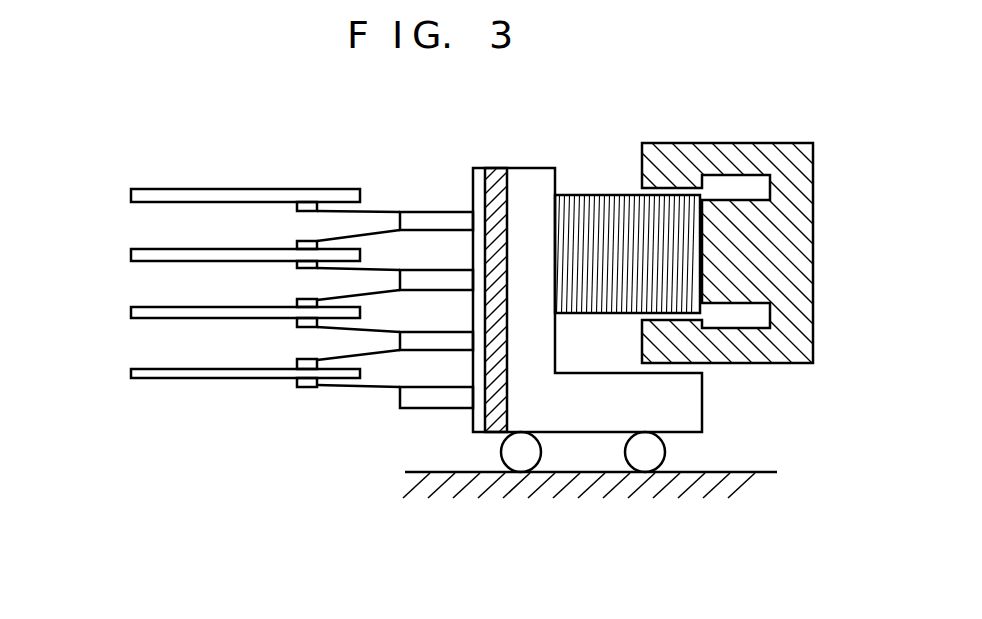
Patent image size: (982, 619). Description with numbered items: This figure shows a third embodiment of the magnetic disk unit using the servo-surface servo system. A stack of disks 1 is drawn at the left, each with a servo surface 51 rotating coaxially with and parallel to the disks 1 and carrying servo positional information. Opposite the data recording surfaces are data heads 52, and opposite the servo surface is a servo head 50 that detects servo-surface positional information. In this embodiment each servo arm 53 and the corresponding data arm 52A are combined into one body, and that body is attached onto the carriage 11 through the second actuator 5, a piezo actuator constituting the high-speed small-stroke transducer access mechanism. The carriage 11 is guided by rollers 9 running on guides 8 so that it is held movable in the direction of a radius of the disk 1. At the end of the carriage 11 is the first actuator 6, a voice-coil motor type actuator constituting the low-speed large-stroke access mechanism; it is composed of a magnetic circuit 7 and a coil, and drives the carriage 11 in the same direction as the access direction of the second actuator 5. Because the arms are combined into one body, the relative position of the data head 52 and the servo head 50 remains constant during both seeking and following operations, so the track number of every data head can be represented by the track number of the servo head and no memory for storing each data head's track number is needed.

The disk 1 is at (160, 189).
The servo surface 51 is at (151, 378).
The data head 52 is at (310, 204).
The servo head 50 is at (297, 380).
The data head arm 52A is at (422, 212).
The servo arm 53 is at (400, 408).
The carriage 11 is at (538, 168).
The second actuator 5 is at (490, 168).
The first actuator 6 is at (609, 195).
The magnetic circuit 7 is at (765, 143).
The roller 9 is at (645, 458).
The guide 8 is at (507, 487).